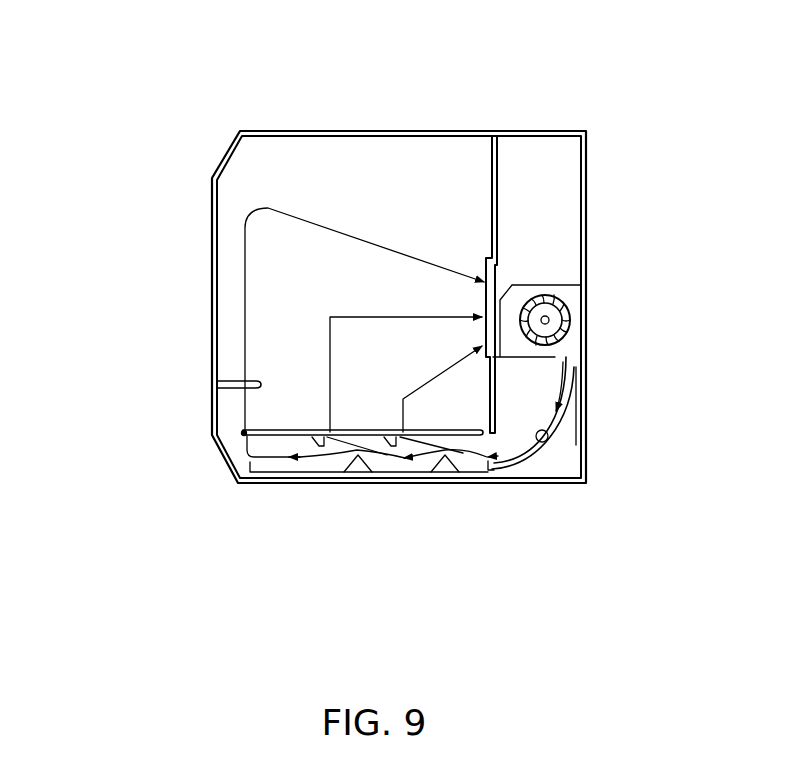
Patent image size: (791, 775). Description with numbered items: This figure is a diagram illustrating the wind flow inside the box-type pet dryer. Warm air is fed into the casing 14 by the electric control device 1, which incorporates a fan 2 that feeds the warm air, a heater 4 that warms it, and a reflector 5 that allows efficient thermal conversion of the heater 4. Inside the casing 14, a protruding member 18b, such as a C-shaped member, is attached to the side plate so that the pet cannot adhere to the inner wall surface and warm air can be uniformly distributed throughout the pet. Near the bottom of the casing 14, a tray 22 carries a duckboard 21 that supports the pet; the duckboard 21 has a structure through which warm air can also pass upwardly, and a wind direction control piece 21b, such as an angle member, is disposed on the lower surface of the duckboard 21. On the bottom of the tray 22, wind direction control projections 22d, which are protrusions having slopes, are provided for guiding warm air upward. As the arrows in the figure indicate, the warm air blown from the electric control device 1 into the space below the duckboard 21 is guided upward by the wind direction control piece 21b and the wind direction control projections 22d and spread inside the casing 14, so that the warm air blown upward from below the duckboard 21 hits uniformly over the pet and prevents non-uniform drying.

The electric control device 1 is at (588, 213).
The fan 2 is at (568, 302).
The heater 4 is at (548, 431).
The reflector 5 is at (578, 447).
The casing 14 is at (370, 129).
The protruding member 18b is at (228, 388).
The duckboard 21 is at (243, 436).
The wind direction control piece 21b is at (318, 447).
The tray 22 is at (282, 476).
The wind direction control projection 22d is at (357, 465).